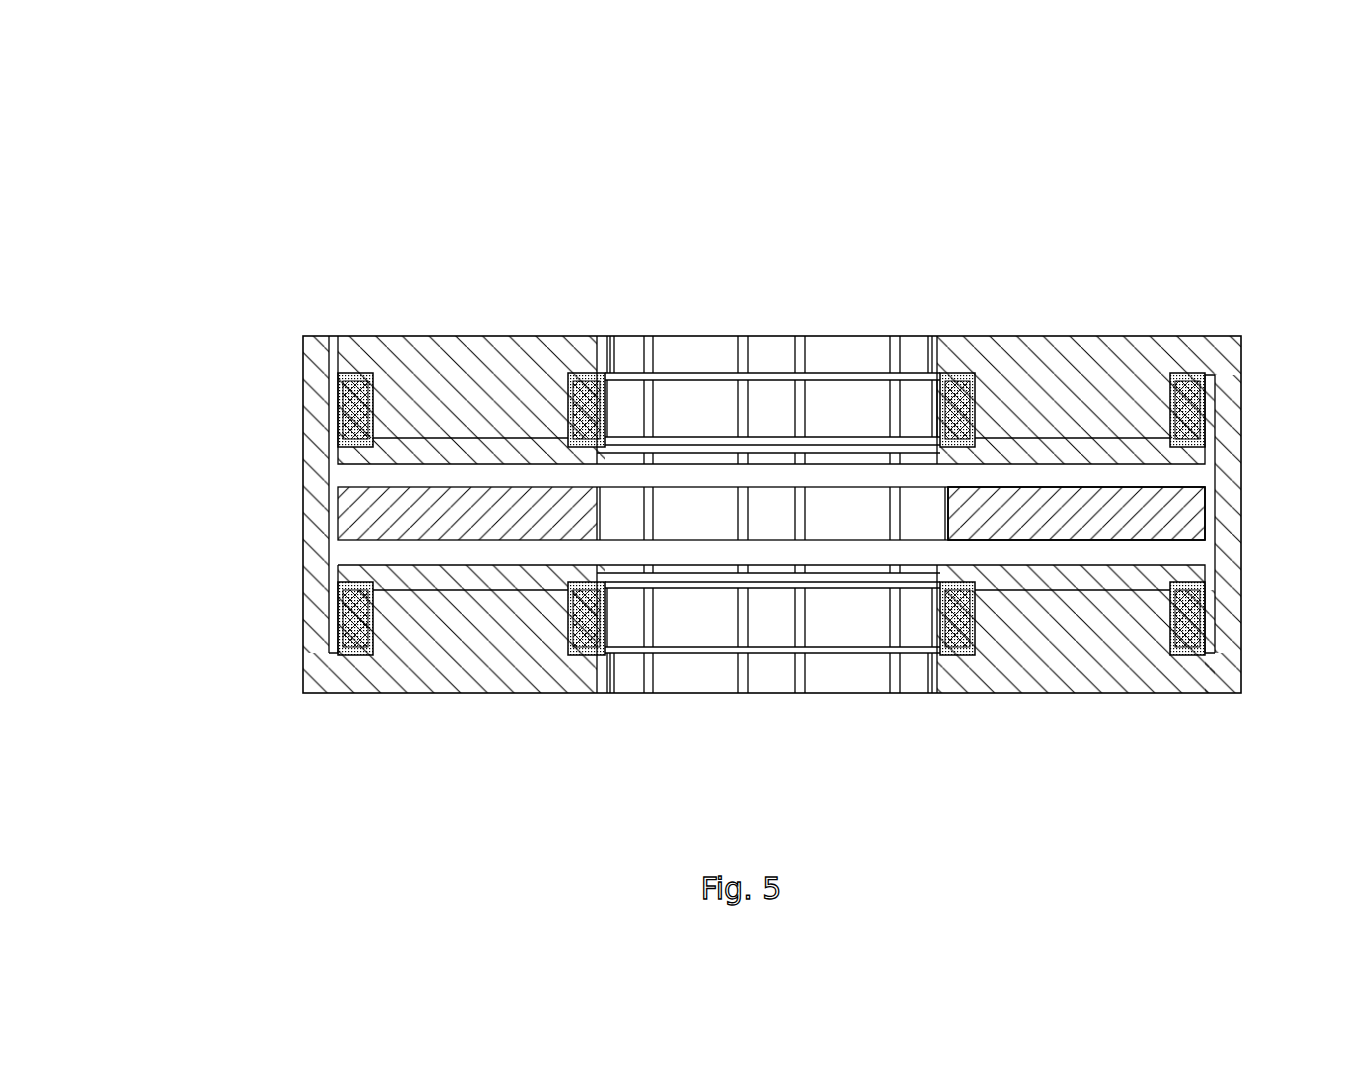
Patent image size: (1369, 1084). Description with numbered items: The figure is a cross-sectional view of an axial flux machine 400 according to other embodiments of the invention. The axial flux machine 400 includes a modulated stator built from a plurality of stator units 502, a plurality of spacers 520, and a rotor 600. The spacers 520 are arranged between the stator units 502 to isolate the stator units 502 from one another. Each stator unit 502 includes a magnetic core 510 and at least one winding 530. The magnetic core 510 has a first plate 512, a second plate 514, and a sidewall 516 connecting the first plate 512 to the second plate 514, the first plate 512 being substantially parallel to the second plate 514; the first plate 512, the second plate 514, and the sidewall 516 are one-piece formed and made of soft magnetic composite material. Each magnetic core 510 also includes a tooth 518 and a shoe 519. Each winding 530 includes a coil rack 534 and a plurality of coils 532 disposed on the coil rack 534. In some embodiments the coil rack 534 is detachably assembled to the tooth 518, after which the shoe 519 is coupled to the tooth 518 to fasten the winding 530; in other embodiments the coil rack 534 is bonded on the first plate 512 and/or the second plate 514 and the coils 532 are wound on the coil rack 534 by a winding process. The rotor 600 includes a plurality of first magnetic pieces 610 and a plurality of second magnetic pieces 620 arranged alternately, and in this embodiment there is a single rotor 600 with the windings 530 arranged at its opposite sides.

The axial flux machine 400 is at (150, 110).
The stator unit 502 is at (467, 309).
The magnetic core 510 is at (152, 336).
The first plate 512 is at (307, 340).
The second plate 514 is at (345, 662).
The sidewall 516 is at (315, 515).
The tooth 518 is at (417, 407).
The shoe 519 is at (372, 455).
The spacer 520 is at (742, 340).
The winding 530 is at (295, 247).
The coil 532 is at (350, 380).
The coil rack 534 is at (372, 383).
The rotor 600 is at (1213, 512).
The first magnetic piece 610 is at (1068, 512).
The second magnetic piece 620 is at (1076, 395).